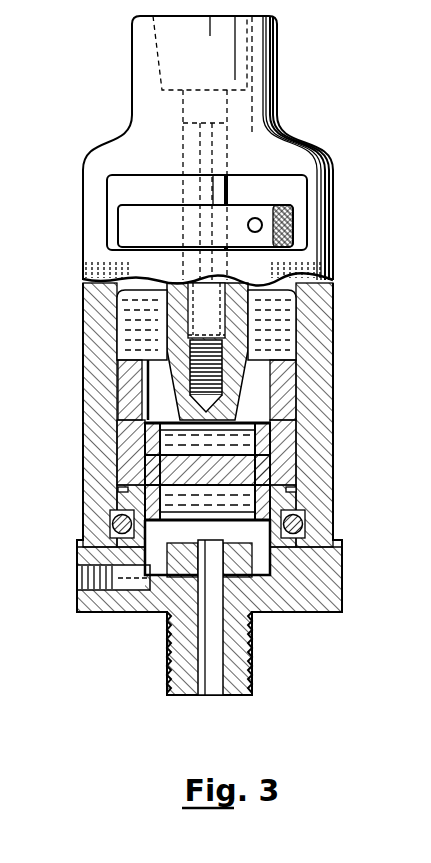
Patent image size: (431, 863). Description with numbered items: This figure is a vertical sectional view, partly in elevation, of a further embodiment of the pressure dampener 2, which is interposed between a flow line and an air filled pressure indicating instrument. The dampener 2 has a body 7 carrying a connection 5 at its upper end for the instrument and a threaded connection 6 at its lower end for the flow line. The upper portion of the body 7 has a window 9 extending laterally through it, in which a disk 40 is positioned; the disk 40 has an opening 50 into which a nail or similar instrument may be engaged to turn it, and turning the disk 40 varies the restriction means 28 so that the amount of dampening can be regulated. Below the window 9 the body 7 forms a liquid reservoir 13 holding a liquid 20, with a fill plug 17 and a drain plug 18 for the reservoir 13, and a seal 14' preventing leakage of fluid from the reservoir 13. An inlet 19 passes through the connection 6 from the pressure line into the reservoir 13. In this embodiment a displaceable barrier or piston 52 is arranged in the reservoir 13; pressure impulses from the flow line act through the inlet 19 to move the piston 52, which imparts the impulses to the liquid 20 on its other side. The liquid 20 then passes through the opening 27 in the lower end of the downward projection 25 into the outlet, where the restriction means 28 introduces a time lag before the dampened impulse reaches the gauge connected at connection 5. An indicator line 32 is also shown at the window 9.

The dampener 2 is at (313, 152).
The connection 5 is at (268, 52).
The connection 6 is at (255, 641).
The body 7 is at (320, 316).
The window 9 is at (207, 212).
The liquid reservoir 13 is at (268, 405).
The seal 14' is at (255, 524).
The fill plug 17 is at (83, 278).
The drain plug 18 is at (85, 578).
The inlet 19 is at (218, 655).
The liquid 20 is at (120, 323).
The downward projection 25 is at (167, 382).
The opening 27 is at (170, 421).
The restriction means 28 is at (221, 353).
The indicator line 32 is at (190, 192).
The disk 40 is at (293, 228).
The opening 50 is at (262, 222).
The displaceable barrier or piston 52 is at (275, 458).